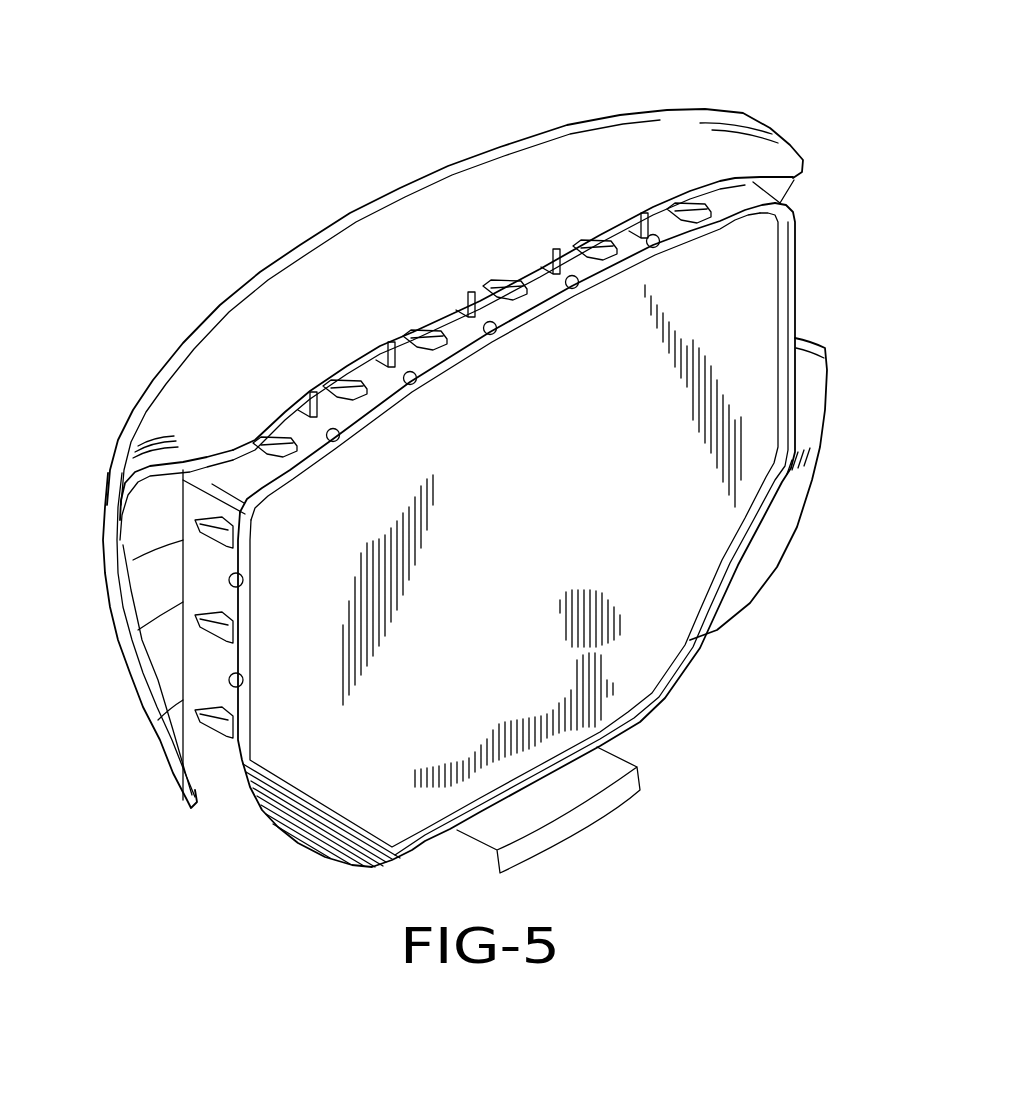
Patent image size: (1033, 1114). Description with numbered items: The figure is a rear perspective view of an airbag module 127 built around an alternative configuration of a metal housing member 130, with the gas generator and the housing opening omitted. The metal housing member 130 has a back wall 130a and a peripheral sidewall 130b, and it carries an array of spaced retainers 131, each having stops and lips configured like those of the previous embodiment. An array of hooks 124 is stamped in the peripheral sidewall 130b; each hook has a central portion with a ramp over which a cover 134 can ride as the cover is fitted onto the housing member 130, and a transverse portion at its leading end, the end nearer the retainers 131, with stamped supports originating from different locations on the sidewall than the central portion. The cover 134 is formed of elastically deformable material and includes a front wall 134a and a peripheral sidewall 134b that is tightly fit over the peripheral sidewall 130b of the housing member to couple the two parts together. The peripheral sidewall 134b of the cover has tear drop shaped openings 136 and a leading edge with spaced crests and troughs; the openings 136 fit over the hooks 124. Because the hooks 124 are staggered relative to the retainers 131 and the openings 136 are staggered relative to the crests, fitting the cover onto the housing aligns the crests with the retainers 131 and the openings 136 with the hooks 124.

The airbag module 127 is at (363, 152).
The cover 134 is at (680, 112).
The front wall 134a is at (107, 509).
The peripheral sidewall 134b is at (200, 507).
The metal housing member 130 is at (736, 331).
The back wall 130a is at (747, 257).
The peripheral sidewall 130b is at (363, 421).
The retainers 131 is at (562, 281).
The hooks 124 is at (351, 385).
The tear drop shaped openings 136 is at (203, 521).